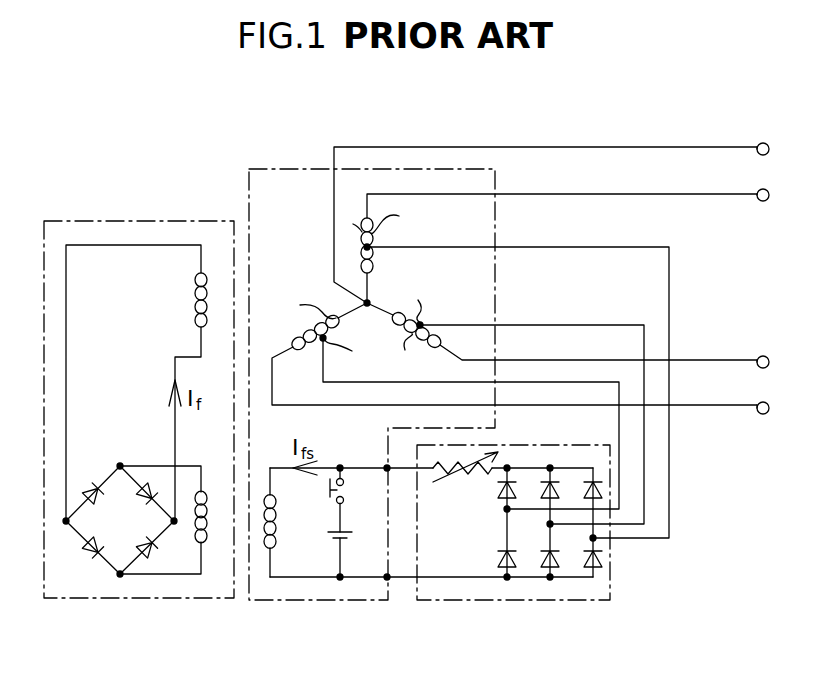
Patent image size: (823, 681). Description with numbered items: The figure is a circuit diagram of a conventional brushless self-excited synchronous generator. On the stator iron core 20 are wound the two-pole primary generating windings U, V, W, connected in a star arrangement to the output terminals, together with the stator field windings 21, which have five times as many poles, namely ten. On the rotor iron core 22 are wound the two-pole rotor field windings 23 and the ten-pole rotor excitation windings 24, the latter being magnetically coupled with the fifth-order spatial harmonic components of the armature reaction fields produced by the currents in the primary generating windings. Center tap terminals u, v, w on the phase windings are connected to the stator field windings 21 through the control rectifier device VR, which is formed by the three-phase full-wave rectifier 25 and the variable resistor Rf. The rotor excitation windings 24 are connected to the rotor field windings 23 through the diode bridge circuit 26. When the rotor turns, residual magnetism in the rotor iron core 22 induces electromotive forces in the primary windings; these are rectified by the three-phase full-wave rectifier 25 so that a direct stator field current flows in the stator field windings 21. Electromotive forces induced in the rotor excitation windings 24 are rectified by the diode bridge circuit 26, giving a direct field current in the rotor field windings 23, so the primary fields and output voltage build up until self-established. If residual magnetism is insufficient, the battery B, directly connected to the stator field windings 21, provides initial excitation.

The stator iron core 20 is at (292, 165).
The stator field windings 21 is at (284, 518).
The rotor iron core 22 is at (102, 218).
The rotor field windings 23 is at (186, 292).
The rotor excitation windings 24 is at (188, 546).
The three-phase full-wave rectifier 25 is at (597, 555).
The diode bridge circuit 26 is at (103, 556).
The battery B is at (373, 535).
The control rectifier device VR is at (513, 603).
The variable resistor Rf is at (465, 481).